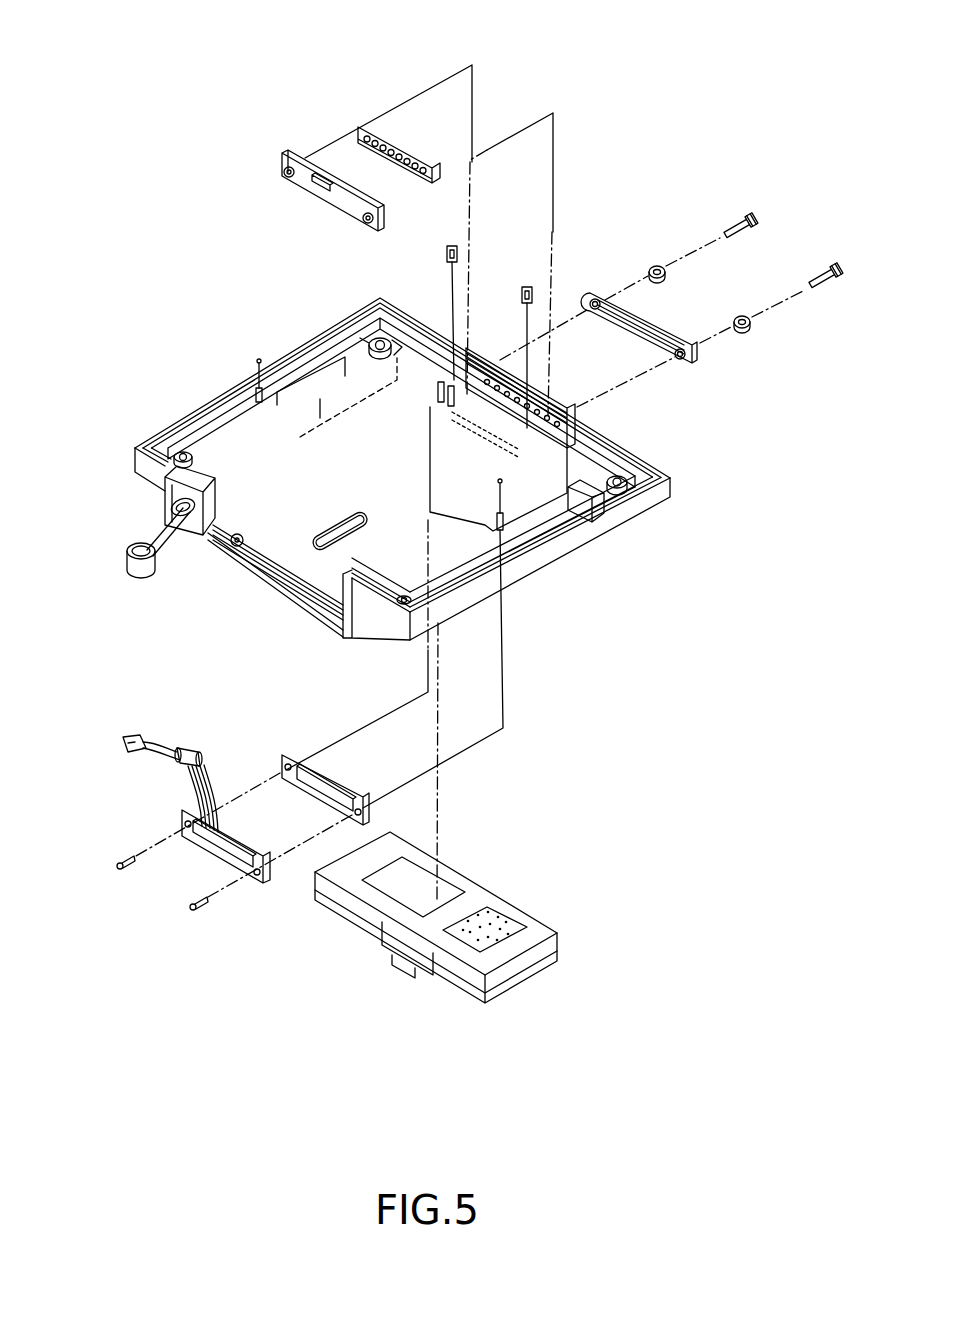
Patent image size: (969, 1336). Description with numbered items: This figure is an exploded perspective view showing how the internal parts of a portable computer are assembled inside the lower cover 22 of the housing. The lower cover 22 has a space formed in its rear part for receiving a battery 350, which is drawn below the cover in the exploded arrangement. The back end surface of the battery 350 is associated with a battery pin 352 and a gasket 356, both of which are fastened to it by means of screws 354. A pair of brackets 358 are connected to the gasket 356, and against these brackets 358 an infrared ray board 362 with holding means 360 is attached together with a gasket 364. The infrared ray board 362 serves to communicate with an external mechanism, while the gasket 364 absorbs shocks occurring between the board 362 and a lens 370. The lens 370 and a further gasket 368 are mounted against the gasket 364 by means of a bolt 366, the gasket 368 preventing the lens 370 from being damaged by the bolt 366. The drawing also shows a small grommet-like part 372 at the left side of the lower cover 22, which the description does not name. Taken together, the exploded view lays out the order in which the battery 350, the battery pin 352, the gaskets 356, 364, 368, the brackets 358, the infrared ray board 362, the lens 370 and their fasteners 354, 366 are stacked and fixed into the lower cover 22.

The lower cover 22 is at (141, 462).
The battery 350 is at (530, 982).
The battery pin 352 is at (182, 817).
The screws 354 is at (190, 908).
The gasket 356 is at (282, 755).
The brackets 358 is at (445, 252).
The holding means 360 is at (345, 216).
The infrared ray board 362 is at (290, 153).
The gasket 364 is at (383, 140).
The bolt 366 is at (835, 268).
The gasket 368 is at (742, 313).
The lens 370 is at (682, 365).
The grommet 372 is at (128, 562).